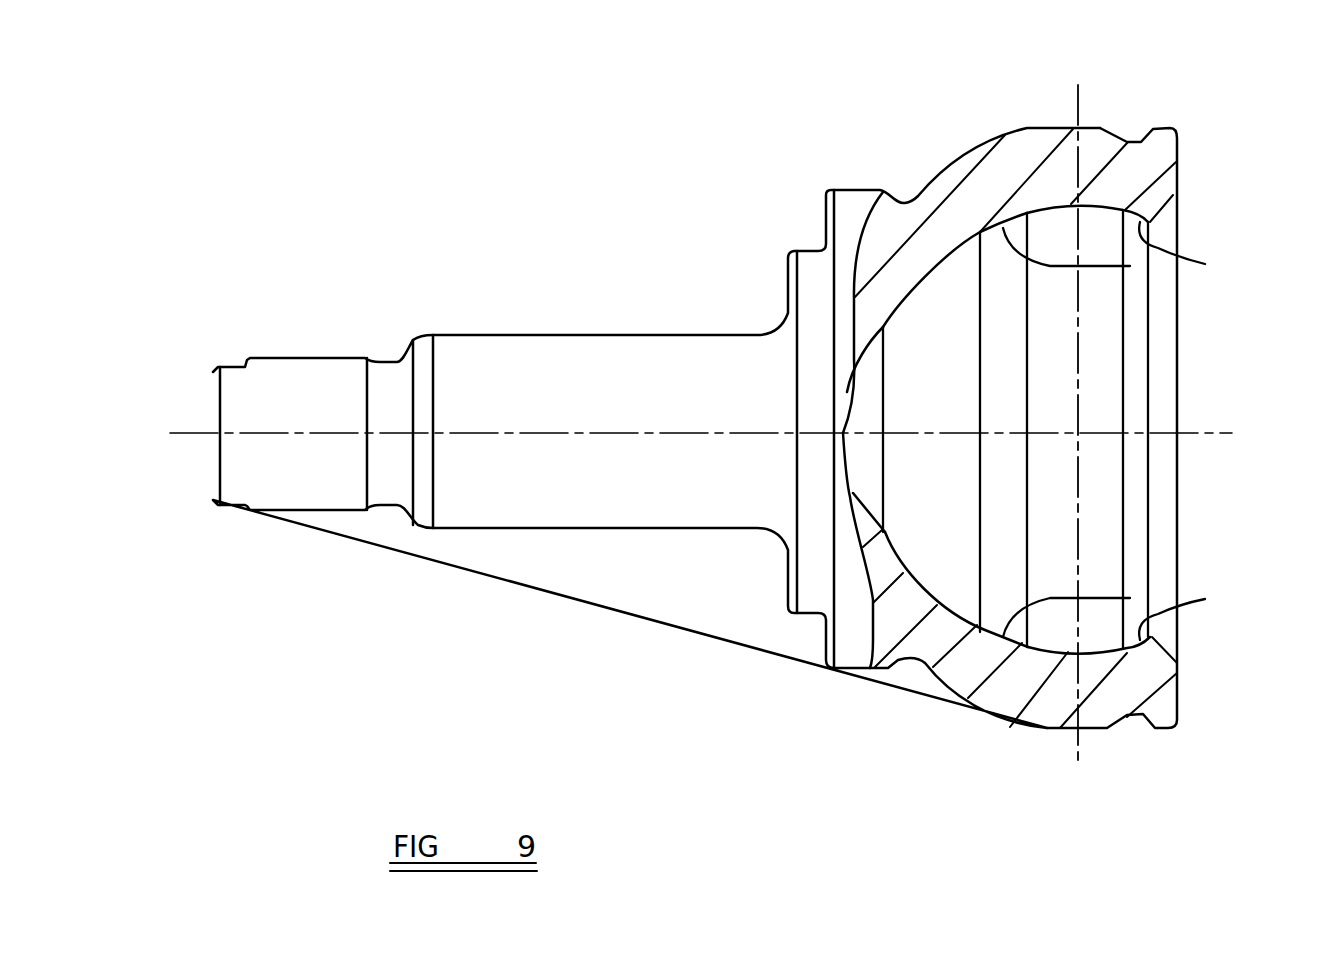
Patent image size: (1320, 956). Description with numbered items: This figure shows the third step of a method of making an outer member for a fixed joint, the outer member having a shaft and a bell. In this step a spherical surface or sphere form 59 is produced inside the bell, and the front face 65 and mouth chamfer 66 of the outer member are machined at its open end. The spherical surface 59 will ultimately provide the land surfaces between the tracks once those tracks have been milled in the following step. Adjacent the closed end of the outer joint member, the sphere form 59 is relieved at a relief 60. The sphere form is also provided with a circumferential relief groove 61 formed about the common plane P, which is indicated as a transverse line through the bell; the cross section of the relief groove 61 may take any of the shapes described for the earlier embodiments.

The spherical surface 59 is at (1130, 266).
The relief 60 is at (920, 278).
The circumferential relief groove 61 is at (1095, 200).
The front face 65 is at (1178, 168).
The mouth chamfer 66 is at (1180, 642).
The common plane P is at (1082, 752).